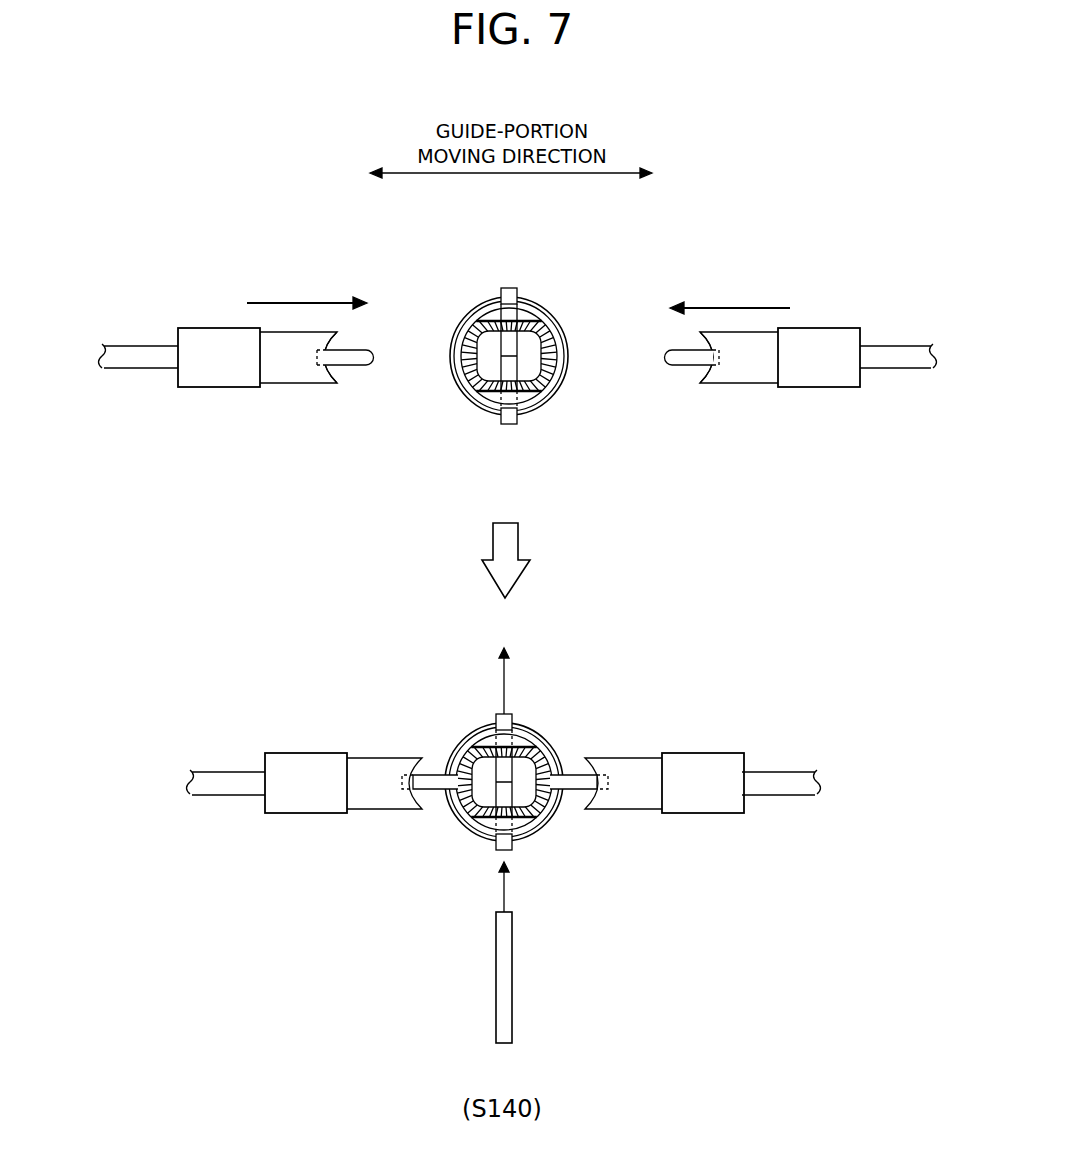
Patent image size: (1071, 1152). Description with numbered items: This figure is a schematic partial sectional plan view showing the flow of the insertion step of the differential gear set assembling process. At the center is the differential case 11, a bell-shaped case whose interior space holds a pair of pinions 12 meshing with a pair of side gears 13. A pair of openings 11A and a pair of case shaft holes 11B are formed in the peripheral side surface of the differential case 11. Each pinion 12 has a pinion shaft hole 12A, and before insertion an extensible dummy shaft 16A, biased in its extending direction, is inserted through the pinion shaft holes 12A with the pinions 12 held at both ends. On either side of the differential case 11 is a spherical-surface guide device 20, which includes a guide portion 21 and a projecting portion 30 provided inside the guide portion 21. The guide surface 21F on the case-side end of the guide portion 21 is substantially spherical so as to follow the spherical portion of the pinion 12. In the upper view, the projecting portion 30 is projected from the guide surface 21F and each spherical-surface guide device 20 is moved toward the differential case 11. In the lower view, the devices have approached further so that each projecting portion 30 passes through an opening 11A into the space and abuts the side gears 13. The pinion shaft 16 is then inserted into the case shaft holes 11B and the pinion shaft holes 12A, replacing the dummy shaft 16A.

The differential case 11 is at (540, 308).
The opening 11A is at (448, 331).
The case shaft hole 11B is at (505, 297).
The pinion 12 is at (491, 316).
The pinion shaft hole 12A is at (495, 725).
The side gear 13 is at (561, 341).
The pinion shaft 16 is at (508, 988).
The dummy shaft 16A is at (508, 369).
The spherical-surface guide device 20 is at (170, 322).
The guide portion 21 is at (283, 376).
The guide surface 21F is at (337, 373).
The projecting portion 30 is at (363, 367).